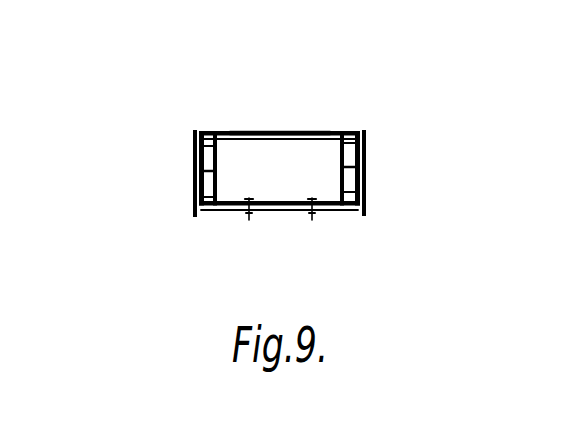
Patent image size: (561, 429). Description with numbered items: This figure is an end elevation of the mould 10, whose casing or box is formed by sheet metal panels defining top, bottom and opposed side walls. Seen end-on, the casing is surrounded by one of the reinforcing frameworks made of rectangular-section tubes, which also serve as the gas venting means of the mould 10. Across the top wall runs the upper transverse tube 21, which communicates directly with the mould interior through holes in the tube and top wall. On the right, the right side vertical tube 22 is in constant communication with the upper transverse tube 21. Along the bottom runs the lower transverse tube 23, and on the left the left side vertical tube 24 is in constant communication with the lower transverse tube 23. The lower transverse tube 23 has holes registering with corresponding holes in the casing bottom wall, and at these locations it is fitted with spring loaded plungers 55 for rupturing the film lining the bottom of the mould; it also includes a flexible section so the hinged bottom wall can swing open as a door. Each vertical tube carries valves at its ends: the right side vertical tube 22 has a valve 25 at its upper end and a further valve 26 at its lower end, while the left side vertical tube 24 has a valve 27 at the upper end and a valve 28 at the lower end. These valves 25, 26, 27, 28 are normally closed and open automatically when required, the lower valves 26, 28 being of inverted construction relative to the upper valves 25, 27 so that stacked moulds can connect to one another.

The mould 10 is at (277, 132).
The upper transverse tube 21 is at (323, 131).
The right side vertical tube 22 is at (366, 177).
The lower transverse tube 23 is at (225, 212).
The left side vertical tube 24 is at (193, 162).
The valve 25 is at (364, 130).
The valve 26 is at (364, 215).
The valve 27 is at (195, 130).
The valve 28 is at (193, 216).
The spring loaded plungers 55 is at (312, 218).